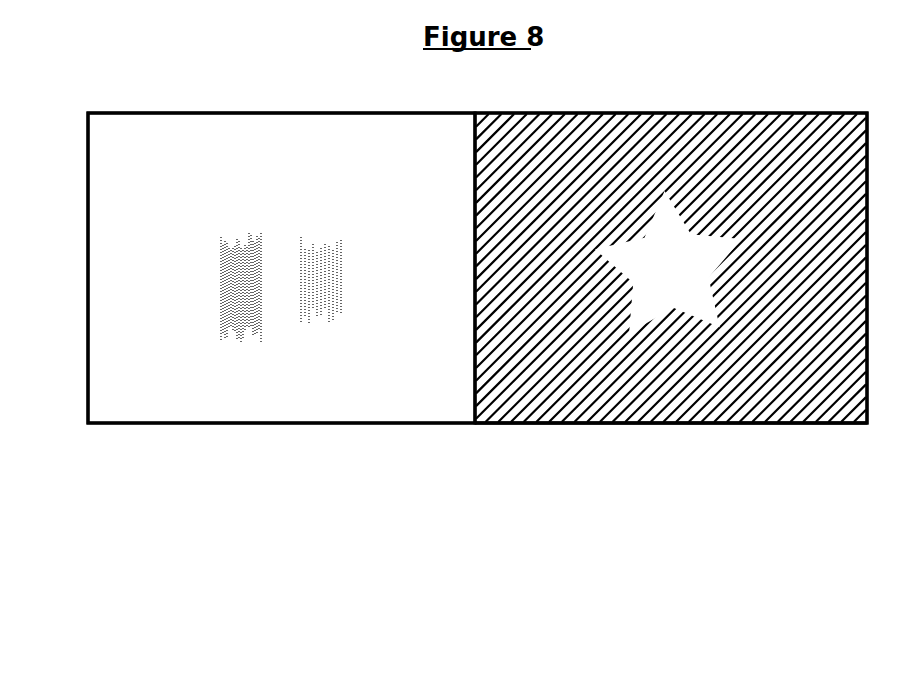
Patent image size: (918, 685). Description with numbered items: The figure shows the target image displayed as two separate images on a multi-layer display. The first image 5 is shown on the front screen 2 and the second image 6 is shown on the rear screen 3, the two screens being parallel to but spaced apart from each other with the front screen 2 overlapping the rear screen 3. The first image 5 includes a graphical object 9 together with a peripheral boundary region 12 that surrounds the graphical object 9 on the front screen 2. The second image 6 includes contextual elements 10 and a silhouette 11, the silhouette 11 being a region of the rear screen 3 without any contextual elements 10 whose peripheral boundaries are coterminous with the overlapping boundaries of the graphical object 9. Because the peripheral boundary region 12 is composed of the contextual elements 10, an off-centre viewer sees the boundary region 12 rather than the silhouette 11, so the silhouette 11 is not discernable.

The front screen 2 is at (287, 427).
The rear screen 3 is at (540, 427).
The first image 5 is at (166, 441).
The second image 6 is at (671, 349).
The graphical object 9 is at (252, 269).
The contextual elements 10 is at (801, 388).
The silhouette 11 is at (690, 272).
The peripheral boundary region 12 is at (210, 183).